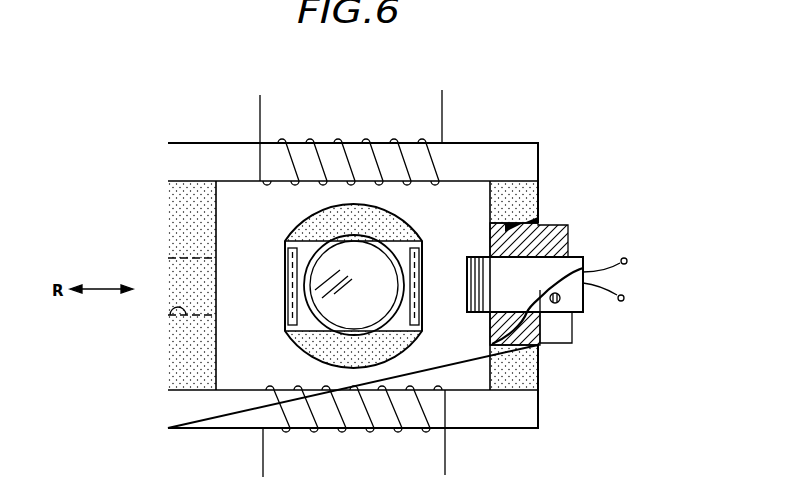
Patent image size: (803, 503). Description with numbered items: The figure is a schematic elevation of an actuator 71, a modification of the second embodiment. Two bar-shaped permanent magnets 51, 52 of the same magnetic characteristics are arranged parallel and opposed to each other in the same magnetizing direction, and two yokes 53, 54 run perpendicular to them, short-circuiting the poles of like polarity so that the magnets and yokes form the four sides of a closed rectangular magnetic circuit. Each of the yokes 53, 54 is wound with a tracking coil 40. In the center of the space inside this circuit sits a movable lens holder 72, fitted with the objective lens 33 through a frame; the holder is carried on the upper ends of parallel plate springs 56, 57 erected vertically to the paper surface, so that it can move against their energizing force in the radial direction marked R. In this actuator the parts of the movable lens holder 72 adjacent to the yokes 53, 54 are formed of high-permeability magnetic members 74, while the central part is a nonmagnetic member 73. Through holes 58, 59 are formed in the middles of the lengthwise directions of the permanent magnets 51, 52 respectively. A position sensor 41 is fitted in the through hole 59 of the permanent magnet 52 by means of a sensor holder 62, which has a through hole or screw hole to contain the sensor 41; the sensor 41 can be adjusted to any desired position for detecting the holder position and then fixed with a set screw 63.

The actuator 71 is at (154, 145).
The tracking coil 40 is at (282, 141).
The yoke 53 is at (482, 152).
The yoke 54 is at (496, 417).
The permanent magnet 51 is at (177, 227).
The permanent magnet 52 is at (538, 203).
The through hole 58 is at (168, 310).
The sensor 41 is at (549, 266).
The through hole 59 is at (492, 318).
The sensor holder 62 is at (562, 344).
The set screw 63 is at (565, 303).
The magnetic member 74 is at (400, 228).
The nonmagnetic member 73 is at (408, 304).
The plate spring 56 is at (289, 270).
The plate spring 57 is at (417, 265).
The objective lens 33 is at (327, 308).
The movable lens holder 72 is at (280, 338).